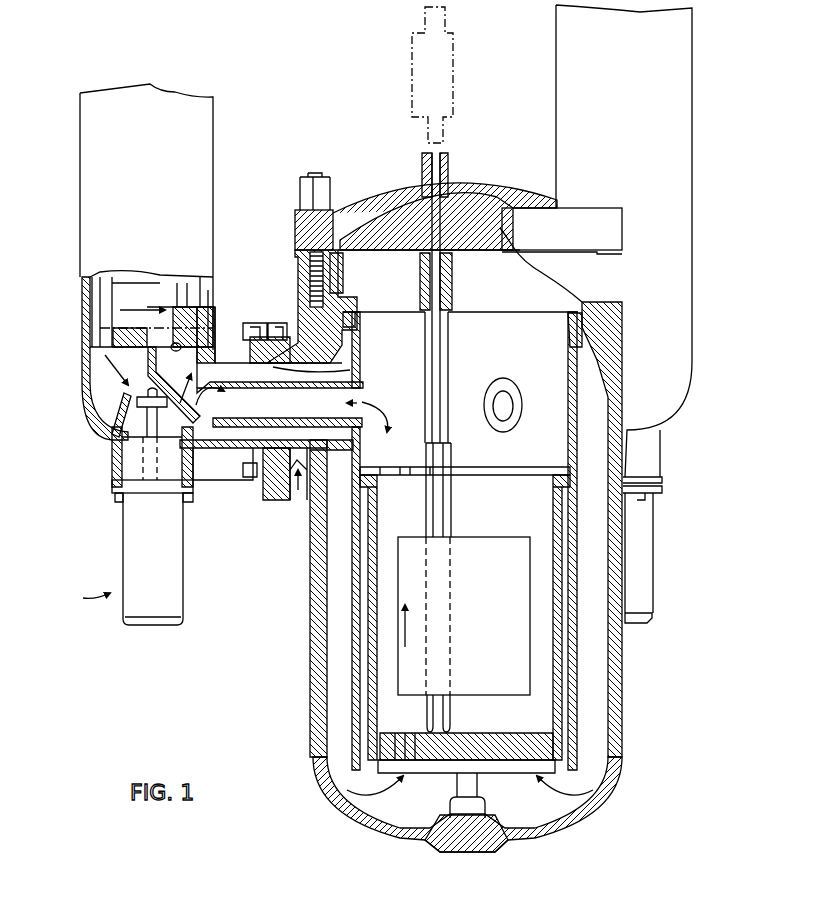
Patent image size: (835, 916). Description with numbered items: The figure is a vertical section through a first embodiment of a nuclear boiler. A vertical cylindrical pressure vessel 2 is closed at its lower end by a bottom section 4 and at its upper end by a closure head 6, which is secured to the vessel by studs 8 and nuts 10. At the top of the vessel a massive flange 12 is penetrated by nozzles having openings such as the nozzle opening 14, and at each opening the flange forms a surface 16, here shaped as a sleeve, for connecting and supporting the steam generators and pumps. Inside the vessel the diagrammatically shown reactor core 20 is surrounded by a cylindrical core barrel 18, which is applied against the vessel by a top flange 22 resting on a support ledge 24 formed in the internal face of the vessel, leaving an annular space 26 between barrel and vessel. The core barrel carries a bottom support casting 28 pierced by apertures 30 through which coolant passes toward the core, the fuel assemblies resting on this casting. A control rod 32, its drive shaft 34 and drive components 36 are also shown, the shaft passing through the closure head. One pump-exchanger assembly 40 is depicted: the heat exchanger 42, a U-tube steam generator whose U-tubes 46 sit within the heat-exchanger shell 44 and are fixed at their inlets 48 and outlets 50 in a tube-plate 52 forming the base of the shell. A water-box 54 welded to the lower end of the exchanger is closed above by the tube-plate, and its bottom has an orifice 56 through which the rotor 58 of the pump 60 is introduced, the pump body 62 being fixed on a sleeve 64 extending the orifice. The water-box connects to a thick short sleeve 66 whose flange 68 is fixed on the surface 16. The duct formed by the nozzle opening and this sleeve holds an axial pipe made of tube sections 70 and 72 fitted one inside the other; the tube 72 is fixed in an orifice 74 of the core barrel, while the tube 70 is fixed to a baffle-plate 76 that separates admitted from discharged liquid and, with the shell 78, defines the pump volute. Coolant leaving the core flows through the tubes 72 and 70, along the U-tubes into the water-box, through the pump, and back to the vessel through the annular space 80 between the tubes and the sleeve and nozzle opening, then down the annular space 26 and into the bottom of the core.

The pressure vessel 2 is at (320, 677).
The bottom section 4 is at (367, 820).
The closure head 6 is at (403, 187).
The studs 8 is at (327, 270).
The nuts 10 is at (327, 193).
The massive flange 12 is at (300, 297).
The nozzle opening 14 is at (330, 363).
The surface 16 is at (267, 487).
The core barrel 18 is at (360, 632).
The reactor core 20 is at (496, 627).
The top flange 22 is at (343, 307).
The support ledge 24 is at (358, 325).
The annular space 26 is at (343, 707).
The bottom support casting 28 is at (510, 743).
The apertures 30 is at (423, 745).
The control rod 32 is at (447, 518).
The drive shaft 34 is at (437, 353).
The drive components 36 is at (447, 80).
The pump-exchanger assembly 40 is at (83, 420).
The heat exchanger 42 is at (210, 140).
The heat-exchanger shell 44 is at (87, 280).
The U-tubes 46 is at (90, 302).
The inlets 48 is at (177, 347).
The outlets 50 is at (90, 347).
The tube-plate 52 is at (117, 328).
The water-box 54 is at (83, 383).
The orifice 56 is at (125, 462).
The rotor 58 is at (120, 440).
The pump 60 is at (90, 585).
The pump body 62 is at (130, 542).
The sleeve 64 is at (117, 475).
The short sleeve 66 is at (235, 453).
The flange 68 is at (253, 477).
The tube section 70 is at (233, 383).
The tube section 72 is at (355, 373).
The orifice 74 is at (357, 440).
The baffle-plate 76 is at (200, 453).
The shell 78 is at (110, 398).
The annular space 80 is at (293, 460).